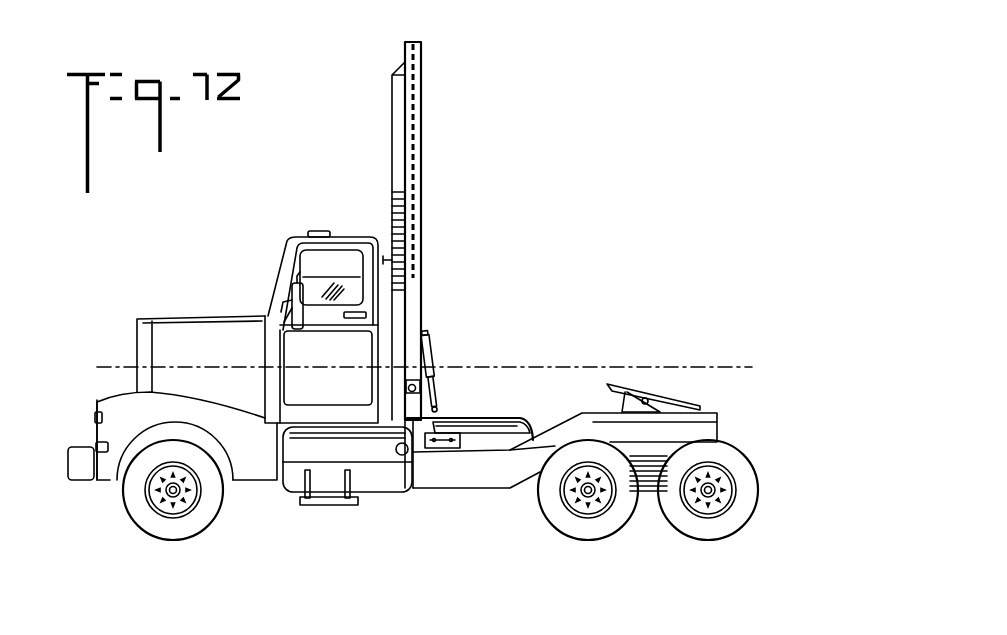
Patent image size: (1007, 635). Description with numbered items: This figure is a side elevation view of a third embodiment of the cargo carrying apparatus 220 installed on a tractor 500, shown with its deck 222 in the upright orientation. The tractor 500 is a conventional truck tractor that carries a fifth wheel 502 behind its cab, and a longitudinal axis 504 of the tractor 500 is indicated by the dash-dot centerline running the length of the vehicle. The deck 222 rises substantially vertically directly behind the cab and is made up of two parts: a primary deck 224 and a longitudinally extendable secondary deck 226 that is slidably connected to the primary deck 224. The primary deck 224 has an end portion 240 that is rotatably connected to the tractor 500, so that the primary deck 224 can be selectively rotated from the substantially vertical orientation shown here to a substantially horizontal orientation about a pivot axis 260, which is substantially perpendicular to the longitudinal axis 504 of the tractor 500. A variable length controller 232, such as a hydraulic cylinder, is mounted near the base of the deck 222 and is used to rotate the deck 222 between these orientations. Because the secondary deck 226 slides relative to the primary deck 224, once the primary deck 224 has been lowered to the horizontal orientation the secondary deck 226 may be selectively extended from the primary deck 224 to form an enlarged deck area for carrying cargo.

The tractor 500 is at (302, 212).
The cargo carrying apparatus 220 is at (486, 282).
The deck 222 is at (437, 153).
The primary deck 224 is at (405, 117).
The extendable secondary deck 226 is at (419, 238).
The variable length controller 232 is at (431, 357).
The end portion 240 is at (414, 387).
The pivot axis 260 is at (438, 415).
The fifth wheel 502 is at (673, 400).
The longitudinal axis 504 is at (692, 367).